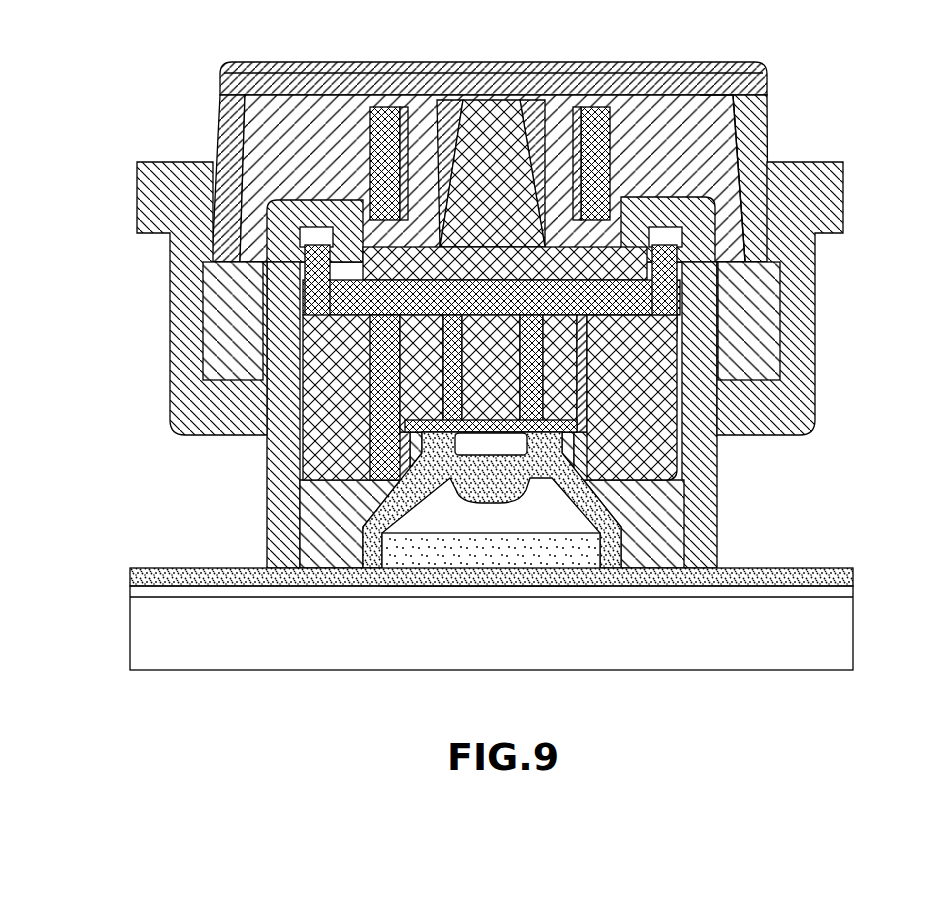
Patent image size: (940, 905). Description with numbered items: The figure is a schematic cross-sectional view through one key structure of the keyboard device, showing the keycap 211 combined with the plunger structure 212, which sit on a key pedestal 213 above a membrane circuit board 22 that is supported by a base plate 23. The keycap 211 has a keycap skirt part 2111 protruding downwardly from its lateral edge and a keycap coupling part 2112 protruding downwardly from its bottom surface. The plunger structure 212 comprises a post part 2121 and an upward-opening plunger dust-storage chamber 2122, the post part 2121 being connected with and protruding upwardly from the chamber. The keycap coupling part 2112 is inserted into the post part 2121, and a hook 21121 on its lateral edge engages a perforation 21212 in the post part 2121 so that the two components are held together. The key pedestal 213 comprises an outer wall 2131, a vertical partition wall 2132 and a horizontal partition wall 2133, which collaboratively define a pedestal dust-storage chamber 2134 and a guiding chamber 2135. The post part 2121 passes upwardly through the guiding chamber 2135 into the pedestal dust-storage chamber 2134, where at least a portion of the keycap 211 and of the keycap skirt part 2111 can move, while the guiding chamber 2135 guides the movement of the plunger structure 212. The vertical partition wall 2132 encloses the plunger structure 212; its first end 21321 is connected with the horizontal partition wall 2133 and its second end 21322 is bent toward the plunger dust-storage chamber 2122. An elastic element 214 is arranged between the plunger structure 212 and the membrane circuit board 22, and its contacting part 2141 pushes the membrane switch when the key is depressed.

The keycap 211 is at (494, 142).
The keycap skirt part 2111 is at (233, 162).
The keycap coupling part 2112 is at (494, 143).
The hook 21121 is at (368, 165).
The post part 2121 is at (700, 66).
The perforation 21212 is at (742, 103).
The plunger dust-storage chamber 2122 is at (749, 146).
The plunger structure 212 is at (394, 318).
The vertical partition wall 2132 is at (217, 318).
The first end 21321 is at (303, 378).
The second end 21322 is at (317, 205).
The key pedestal 213 is at (507, 363).
The outer wall 2131 is at (178, 280).
The horizontal partition wall 2133 is at (235, 390).
The pedestal dust-storage chamber 2134 is at (770, 262).
The guiding chamber 2135 is at (658, 535).
The elastic element 214 is at (600, 515).
The contacting part 2141 is at (492, 493).
The membrane circuit board 22 is at (835, 587).
The base plate 23 is at (846, 652).